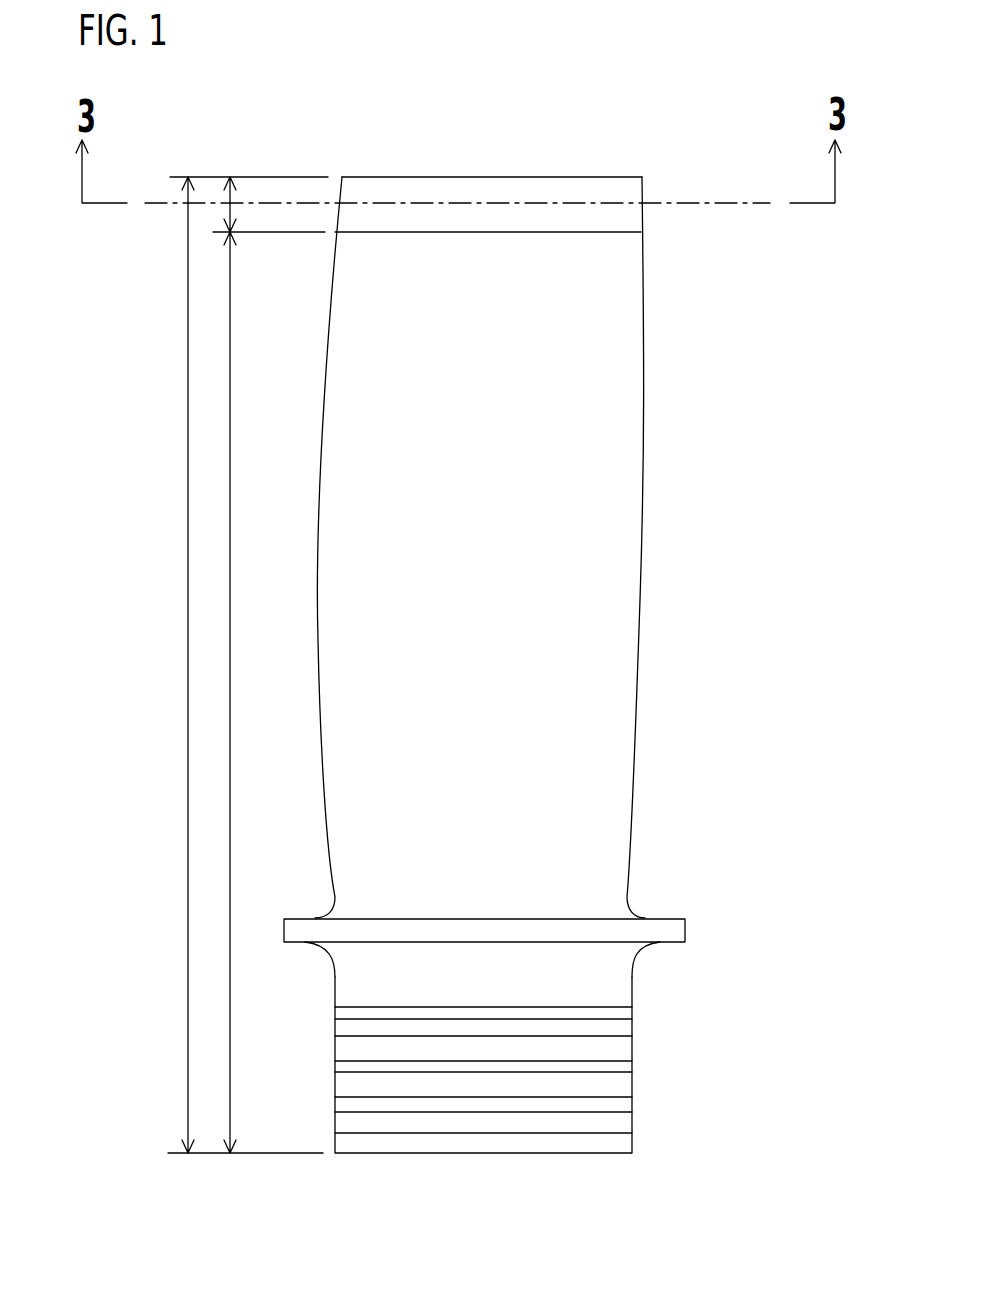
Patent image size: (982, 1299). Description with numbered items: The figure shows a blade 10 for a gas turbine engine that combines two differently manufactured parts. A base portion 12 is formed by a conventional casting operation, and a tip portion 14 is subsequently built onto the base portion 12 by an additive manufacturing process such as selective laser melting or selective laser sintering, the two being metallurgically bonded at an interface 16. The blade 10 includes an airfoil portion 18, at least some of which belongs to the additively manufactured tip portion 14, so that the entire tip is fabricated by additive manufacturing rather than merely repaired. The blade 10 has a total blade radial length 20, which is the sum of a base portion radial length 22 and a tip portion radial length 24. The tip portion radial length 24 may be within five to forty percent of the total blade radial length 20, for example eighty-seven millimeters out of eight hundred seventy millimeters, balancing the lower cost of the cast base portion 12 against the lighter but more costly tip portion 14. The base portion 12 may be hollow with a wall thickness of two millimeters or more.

The blade 10 is at (580, 107).
The base portion 12 is at (645, 308).
The tip portion 14 is at (642, 188).
The interface 16 is at (487, 232).
The airfoil portion 18 is at (664, 489).
The total blade radial length 20 is at (188, 665).
The base portion radial length 22 is at (230, 665).
The tip portion radial length 24 is at (236, 197).